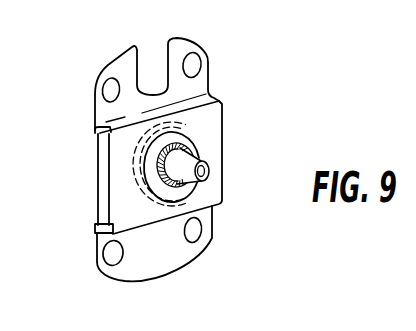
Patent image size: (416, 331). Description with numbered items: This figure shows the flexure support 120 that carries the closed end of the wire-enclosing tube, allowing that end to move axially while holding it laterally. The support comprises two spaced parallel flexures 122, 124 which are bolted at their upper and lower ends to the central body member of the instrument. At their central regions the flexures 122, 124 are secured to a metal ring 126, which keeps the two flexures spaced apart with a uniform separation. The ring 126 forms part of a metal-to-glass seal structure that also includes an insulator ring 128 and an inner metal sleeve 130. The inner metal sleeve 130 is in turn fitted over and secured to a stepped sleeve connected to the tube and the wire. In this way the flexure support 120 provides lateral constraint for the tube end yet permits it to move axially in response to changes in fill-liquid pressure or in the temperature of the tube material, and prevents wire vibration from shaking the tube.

The flexure support 120 is at (220, 53).
The flexure 122 is at (98, 161).
The flexure 124 is at (108, 190).
The metal ring 126 is at (193, 142).
The insulator ring 128 is at (204, 151).
The inner metal sleeve 130 is at (209, 181).